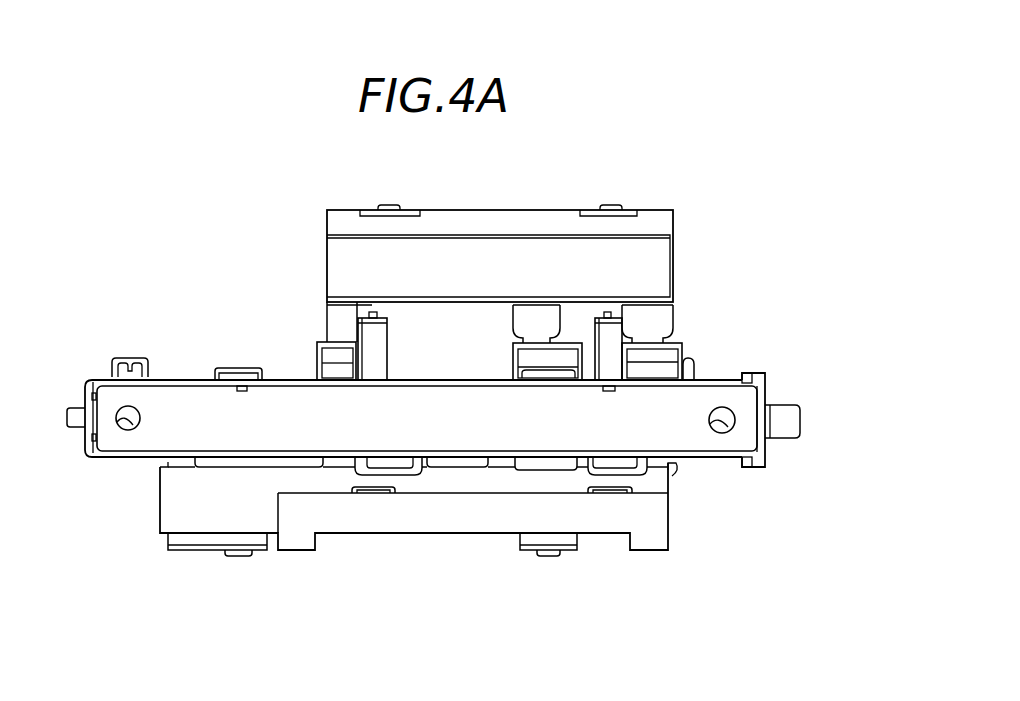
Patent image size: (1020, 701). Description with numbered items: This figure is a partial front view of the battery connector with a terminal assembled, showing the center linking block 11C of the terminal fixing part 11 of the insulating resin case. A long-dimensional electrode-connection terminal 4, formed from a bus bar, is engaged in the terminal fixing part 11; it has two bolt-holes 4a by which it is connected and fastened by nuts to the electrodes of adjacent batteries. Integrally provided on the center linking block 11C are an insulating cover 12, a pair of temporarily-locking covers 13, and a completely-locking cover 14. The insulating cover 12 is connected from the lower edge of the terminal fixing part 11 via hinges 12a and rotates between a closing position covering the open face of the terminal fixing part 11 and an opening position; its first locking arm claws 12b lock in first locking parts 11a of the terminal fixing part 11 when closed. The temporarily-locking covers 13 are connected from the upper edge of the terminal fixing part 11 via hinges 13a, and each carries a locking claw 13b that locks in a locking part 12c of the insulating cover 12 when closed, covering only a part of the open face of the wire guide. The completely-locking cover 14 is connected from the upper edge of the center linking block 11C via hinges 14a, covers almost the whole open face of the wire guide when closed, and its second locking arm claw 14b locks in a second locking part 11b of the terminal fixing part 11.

The long-dimensional electrode-connection terminal 4 is at (282, 403).
The bolt-hole 4a is at (116, 428).
The terminal fixing part 11 is at (188, 378).
The first locking part 11a is at (243, 368).
The second locking part 11b is at (403, 475).
The center linking block 11C is at (334, 578).
The insulating cover 12 is at (210, 515).
The hinge 12a is at (182, 462).
The first locking arm claw 12b is at (238, 555).
The locking part 12c is at (371, 500).
The temporarily-locking cover 13 is at (362, 332).
The hinge 13a is at (365, 372).
The locking claw 13b is at (372, 312).
The completely-locking cover 14 is at (503, 255).
The hinge 14a is at (532, 338).
The second locking arm claw 14b is at (388, 206).